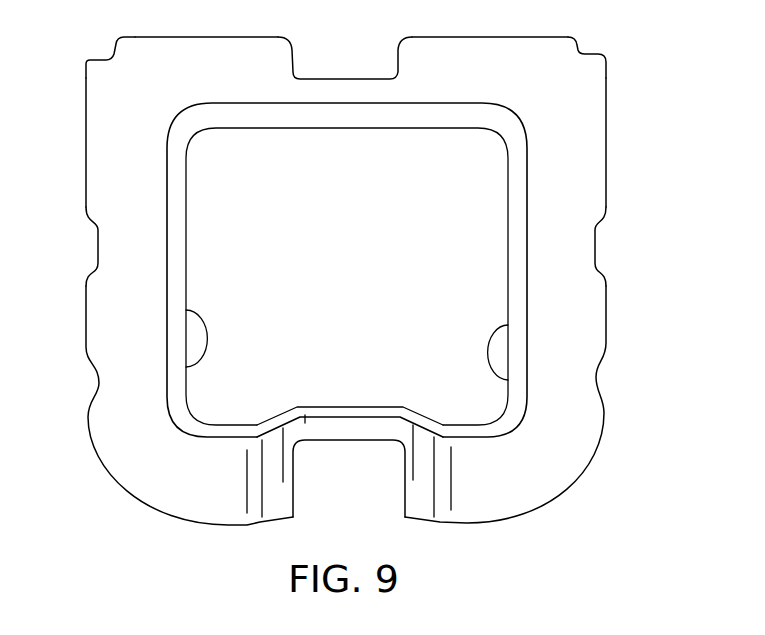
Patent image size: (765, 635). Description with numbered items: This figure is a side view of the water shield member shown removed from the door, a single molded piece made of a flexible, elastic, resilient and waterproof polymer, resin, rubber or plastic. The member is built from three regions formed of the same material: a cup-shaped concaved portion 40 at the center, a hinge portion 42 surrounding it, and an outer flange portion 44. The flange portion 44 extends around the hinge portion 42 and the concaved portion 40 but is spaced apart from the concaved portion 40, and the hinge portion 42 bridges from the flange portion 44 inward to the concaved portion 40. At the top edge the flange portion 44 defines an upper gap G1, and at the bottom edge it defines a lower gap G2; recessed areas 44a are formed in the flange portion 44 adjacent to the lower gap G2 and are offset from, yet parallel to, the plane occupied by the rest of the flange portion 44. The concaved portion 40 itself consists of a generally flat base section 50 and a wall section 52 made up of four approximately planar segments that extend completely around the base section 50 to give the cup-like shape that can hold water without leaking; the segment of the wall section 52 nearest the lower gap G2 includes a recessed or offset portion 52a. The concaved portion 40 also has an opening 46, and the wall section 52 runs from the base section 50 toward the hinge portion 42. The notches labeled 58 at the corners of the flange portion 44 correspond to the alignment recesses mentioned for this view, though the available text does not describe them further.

The cup-shaped concaved portion 40 is at (462, 183).
The hinge portion 42 is at (177, 222).
The flange portion 44 is at (489, 65).
The recessed areas 44a is at (405, 465).
The opening 46 is at (197, 366).
The base section 50 is at (470, 285).
The wall section 52 is at (492, 372).
The recessed or offset portion 52a is at (331, 406).
The corner notches 58 is at (111, 58).
The upper gap G1 is at (334, 78).
The lower gap G2 is at (403, 488).